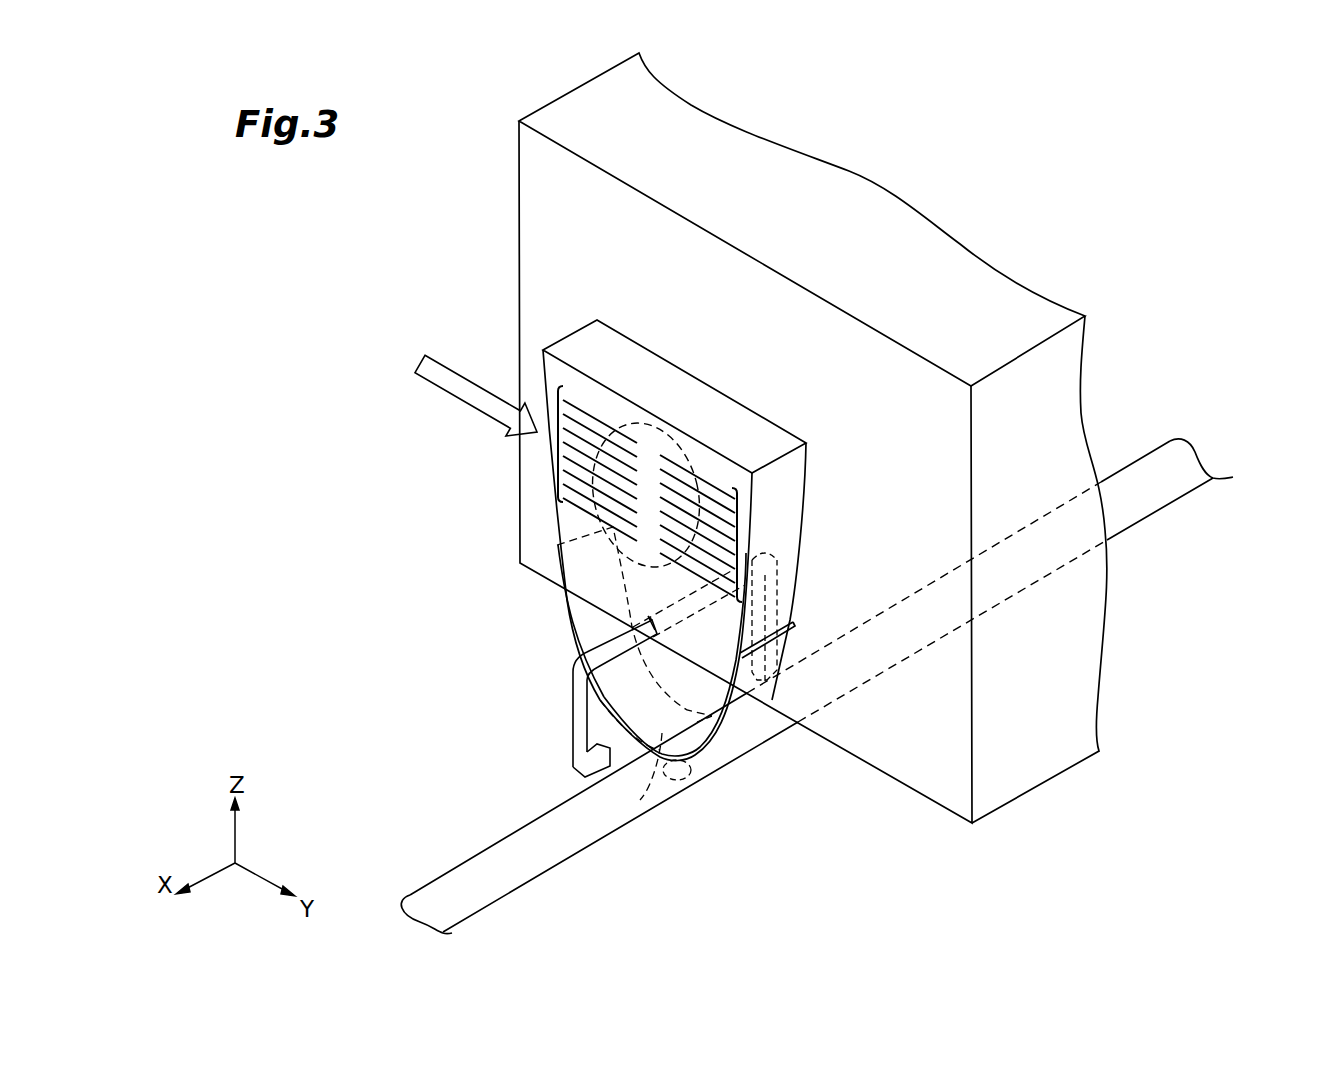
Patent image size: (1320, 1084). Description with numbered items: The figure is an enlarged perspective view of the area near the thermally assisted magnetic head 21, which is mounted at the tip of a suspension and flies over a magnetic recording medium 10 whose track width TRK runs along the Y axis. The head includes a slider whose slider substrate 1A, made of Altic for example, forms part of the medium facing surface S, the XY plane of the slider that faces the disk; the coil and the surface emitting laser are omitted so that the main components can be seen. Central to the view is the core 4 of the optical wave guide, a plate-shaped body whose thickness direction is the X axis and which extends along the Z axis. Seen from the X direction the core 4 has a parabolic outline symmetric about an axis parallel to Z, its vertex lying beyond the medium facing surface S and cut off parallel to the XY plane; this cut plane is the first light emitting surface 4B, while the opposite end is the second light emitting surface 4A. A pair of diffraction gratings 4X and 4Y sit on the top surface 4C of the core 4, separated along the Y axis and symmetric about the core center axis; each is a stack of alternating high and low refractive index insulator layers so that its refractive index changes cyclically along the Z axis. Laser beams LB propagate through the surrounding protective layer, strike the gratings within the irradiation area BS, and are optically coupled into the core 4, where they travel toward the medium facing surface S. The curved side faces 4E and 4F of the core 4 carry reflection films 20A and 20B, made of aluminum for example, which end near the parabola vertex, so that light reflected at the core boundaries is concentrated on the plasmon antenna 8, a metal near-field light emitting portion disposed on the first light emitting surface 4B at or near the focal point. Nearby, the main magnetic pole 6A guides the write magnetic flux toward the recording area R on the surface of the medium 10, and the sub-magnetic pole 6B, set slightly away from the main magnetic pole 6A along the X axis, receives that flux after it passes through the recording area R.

The thermally assisted magnetic head 21 is at (813, 452).
The slider substrate 1A is at (1000, 784).
The magnetic recording medium 10 is at (1183, 467).
The track width TRK is at (438, 822).
The laser beams LB is at (462, 368).
The core of the optical wave guide 4 is at (640, 586).
The second light emitting surface 4A is at (678, 385).
The first light emitting surface 4B is at (660, 737).
The top surface of the core 4C is at (630, 578).
The side face of the core 4E is at (777, 562).
The side face of the core 4F is at (577, 517).
The diffraction grating 4X is at (555, 443).
The diffraction grating 4Y is at (740, 543).
The irradiation area BS is at (625, 423).
The reflection film 20A is at (738, 717).
The reflection film 20B is at (567, 607).
The main magnetic pole 6A is at (580, 752).
The sub-magnetic pole 6B is at (790, 615).
The plasmon antenna 8 is at (682, 720).
The recording area R is at (688, 782).
The medium facing surface S is at (773, 810).